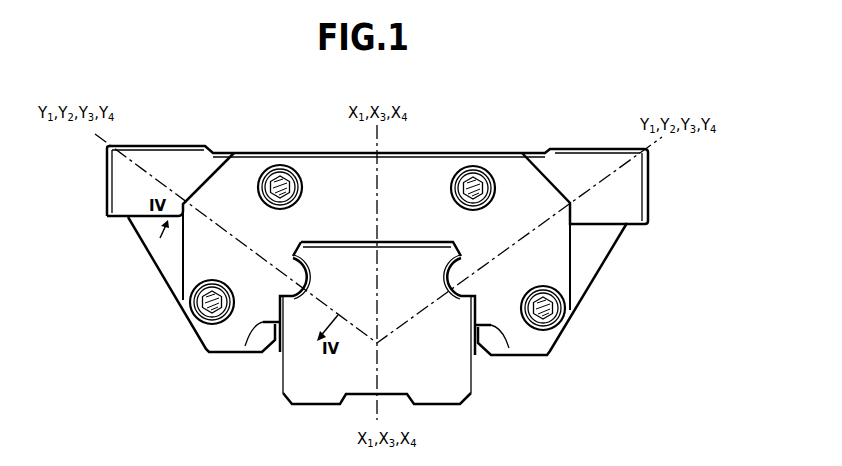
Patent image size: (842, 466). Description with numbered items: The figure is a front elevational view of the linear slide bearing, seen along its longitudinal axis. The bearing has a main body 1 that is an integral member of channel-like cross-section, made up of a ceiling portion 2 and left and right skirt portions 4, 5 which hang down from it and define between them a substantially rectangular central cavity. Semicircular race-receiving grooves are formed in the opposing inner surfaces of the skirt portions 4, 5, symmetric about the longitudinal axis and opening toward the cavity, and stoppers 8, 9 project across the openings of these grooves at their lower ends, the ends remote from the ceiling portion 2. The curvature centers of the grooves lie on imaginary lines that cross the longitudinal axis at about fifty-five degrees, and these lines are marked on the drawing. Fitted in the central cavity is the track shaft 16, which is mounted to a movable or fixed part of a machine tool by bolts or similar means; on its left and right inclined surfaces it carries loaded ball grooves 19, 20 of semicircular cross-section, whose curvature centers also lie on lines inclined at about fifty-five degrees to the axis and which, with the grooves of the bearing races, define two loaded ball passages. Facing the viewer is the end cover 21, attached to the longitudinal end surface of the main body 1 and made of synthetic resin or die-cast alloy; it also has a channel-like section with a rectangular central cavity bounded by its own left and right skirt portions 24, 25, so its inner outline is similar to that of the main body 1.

The main body 1 is at (566, 145).
The ceiling portion 2 is at (313, 152).
The left skirt portion 4 is at (157, 248).
The right skirt portion 5 is at (597, 250).
The stopper 8 is at (262, 332).
The stopper 9 is at (486, 334).
The track shaft 16 is at (331, 392).
The loaded ball groove 19 is at (280, 352).
The loaded ball groove 20 is at (463, 330).
The end cover 21 is at (446, 165).
The left skirt portion 24 is at (560, 284).
The right skirt portion 25 is at (190, 279).